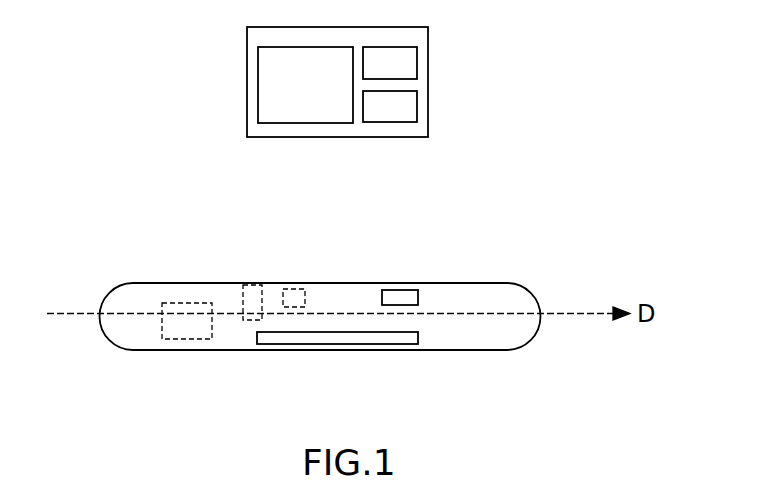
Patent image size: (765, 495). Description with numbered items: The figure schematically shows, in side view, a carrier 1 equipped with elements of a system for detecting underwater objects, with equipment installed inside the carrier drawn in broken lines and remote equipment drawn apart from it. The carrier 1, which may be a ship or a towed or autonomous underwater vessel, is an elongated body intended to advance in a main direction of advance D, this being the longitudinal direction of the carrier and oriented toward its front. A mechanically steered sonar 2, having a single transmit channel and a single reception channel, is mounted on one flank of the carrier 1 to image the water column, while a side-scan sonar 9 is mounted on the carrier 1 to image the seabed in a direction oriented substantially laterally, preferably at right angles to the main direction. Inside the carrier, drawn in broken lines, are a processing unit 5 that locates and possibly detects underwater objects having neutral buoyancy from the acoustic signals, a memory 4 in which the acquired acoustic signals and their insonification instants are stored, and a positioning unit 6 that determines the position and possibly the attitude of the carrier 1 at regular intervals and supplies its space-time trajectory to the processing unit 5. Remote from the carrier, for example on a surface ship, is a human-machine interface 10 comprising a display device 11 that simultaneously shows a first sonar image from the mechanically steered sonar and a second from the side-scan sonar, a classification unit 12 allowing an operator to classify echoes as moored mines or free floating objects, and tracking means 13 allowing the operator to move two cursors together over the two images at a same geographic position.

The carrier 1 is at (518, 288).
The mechanically steered sonar 2 is at (400, 298).
The memory 4 is at (295, 297).
The processing unit 5 is at (185, 303).
The positioning unit 6 is at (248, 297).
The side-scan sonar 9 is at (390, 338).
The human-machine interface 10 is at (247, 41).
The display device 11 is at (258, 73).
The classification unit 12 is at (417, 107).
The tracking means 13 is at (417, 58).